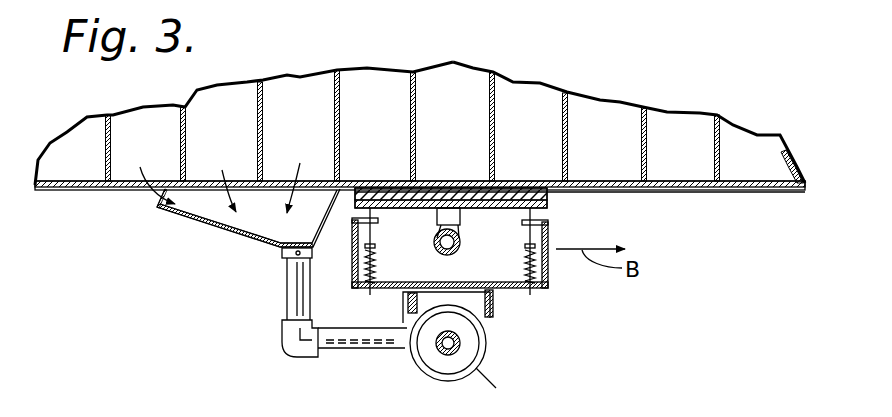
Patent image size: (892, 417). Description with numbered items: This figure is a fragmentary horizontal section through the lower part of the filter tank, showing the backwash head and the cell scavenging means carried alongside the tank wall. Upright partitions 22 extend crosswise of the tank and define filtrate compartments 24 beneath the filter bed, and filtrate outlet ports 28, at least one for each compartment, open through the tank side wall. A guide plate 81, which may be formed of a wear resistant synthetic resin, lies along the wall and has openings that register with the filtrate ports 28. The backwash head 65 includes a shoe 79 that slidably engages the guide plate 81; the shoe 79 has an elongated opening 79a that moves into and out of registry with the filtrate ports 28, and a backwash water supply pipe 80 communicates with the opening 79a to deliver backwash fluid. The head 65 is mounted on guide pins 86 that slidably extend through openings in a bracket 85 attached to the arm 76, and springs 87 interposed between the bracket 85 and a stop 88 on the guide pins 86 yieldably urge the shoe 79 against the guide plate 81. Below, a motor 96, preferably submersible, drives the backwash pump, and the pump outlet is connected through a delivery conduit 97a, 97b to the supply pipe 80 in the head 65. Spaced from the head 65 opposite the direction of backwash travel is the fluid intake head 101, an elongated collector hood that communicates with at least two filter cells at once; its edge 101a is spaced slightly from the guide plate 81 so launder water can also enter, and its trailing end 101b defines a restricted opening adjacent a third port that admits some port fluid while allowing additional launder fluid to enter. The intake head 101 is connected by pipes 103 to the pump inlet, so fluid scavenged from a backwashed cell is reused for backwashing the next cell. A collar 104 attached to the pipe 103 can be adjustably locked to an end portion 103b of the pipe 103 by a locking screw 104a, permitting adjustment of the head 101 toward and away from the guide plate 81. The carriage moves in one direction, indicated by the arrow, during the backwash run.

The partitions 22 is at (263, 82).
The filtrate compartments 24 is at (600, 100).
The filtrate outlet ports 28 is at (590, 181).
The guide plate 81 is at (708, 191).
The backwash head 65 is at (550, 201).
The elongated opening 79a is at (422, 198).
The backwash water supply pipe 80 is at (500, 196).
The shoe 79 is at (516, 210).
The bracket 85 is at (550, 283).
The guide pins 86 is at (532, 241).
The springs 87 is at (370, 272).
The stop 88 is at (372, 250).
The delivery conduit 97b is at (451, 254).
The arm 76 is at (496, 298).
The motor 96 is at (456, 381).
The delivery conduit 97a is at (458, 348).
The fluid intake head 101 is at (245, 241).
The edge 101a is at (222, 173).
The trailing end 101b is at (168, 203).
The collar 104 is at (278, 260).
The locking screw 104a is at (310, 297).
The end portion 103b is at (285, 303).
The pipes 103 is at (373, 350).